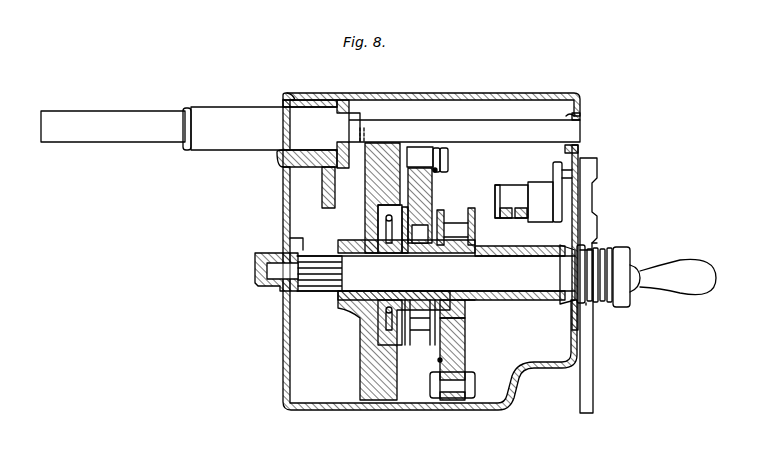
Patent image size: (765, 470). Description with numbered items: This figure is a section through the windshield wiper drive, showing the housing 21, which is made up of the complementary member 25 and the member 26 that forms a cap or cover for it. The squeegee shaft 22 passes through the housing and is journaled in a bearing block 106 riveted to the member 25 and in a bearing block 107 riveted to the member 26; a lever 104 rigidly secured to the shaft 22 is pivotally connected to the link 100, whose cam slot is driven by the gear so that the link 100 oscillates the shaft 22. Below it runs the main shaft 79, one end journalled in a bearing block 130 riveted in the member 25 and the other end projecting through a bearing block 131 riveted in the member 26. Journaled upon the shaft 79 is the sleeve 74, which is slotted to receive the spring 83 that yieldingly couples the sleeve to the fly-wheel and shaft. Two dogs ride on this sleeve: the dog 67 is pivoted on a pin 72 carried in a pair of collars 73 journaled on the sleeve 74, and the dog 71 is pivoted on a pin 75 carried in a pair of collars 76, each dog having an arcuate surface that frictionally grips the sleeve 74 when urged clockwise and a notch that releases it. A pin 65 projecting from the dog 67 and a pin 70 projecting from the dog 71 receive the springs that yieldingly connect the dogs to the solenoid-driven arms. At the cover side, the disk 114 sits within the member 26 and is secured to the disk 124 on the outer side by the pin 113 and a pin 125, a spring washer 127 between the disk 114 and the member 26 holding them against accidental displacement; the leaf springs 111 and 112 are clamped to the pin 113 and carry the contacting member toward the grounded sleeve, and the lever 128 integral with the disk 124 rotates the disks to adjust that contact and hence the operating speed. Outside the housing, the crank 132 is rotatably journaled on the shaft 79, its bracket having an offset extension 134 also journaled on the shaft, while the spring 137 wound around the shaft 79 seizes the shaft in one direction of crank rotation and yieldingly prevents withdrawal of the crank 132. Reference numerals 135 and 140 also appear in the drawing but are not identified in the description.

The housing 21 is at (336, 411).
The shaft 22 is at (196, 150).
The member 25 is at (283, 305).
The member 26 is at (500, 412).
The pin 65 is at (419, 157).
The dog 67 is at (432, 190).
The pin 70 is at (448, 400).
The dog 71 is at (465, 360).
The pin 72 is at (365, 216).
The collars 73 is at (405, 335).
The sleeve 74 is at (350, 306).
The pin 75 is at (466, 316).
The collars 76 is at (443, 215).
The shaft 79 is at (340, 247).
The spring 83 is at (378, 328).
The link 100 is at (322, 196).
The lever 104 is at (342, 99).
The bearing block 106 is at (288, 96).
The bearing block 107 is at (578, 122).
The leaf spring 111 is at (522, 219).
The leaf spring 112 is at (503, 219).
The pin 113 is at (540, 184).
The disk 114 is at (560, 200).
The disk 124 is at (566, 170).
The pin 125 is at (598, 181).
The spring washer 127 is at (578, 176).
The lever 128 is at (593, 385).
The bearing block 130 is at (255, 275).
The bearing block 131 is at (565, 300).
The crank 132 is at (622, 249).
The offset extension 134 is at (590, 305).
The handle 135 is at (640, 290).
The spring 137 is at (600, 246).
The seal 140 is at (302, 250).